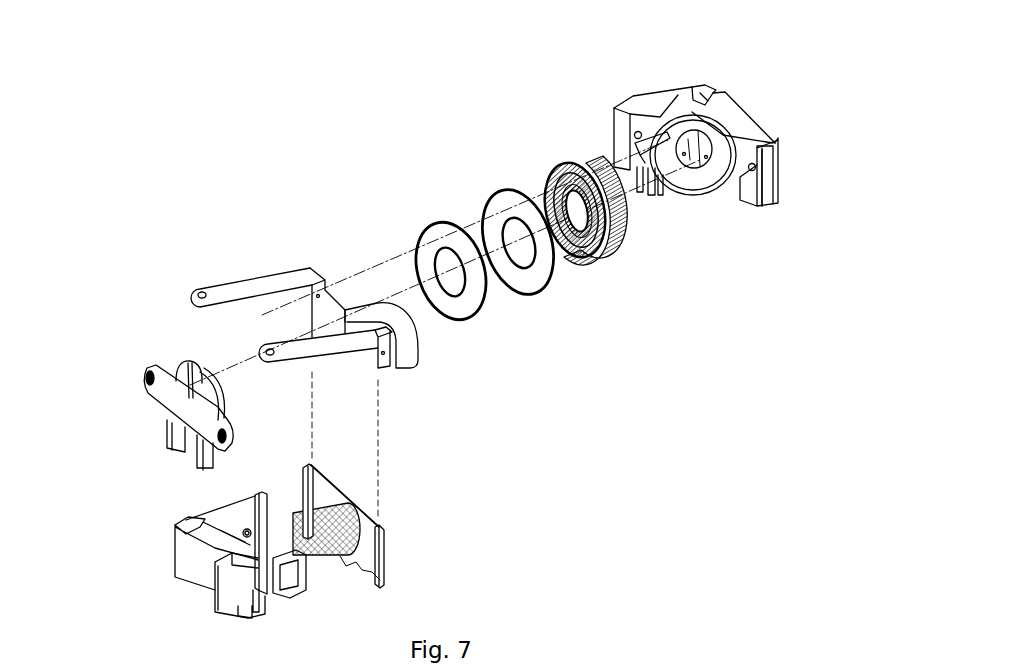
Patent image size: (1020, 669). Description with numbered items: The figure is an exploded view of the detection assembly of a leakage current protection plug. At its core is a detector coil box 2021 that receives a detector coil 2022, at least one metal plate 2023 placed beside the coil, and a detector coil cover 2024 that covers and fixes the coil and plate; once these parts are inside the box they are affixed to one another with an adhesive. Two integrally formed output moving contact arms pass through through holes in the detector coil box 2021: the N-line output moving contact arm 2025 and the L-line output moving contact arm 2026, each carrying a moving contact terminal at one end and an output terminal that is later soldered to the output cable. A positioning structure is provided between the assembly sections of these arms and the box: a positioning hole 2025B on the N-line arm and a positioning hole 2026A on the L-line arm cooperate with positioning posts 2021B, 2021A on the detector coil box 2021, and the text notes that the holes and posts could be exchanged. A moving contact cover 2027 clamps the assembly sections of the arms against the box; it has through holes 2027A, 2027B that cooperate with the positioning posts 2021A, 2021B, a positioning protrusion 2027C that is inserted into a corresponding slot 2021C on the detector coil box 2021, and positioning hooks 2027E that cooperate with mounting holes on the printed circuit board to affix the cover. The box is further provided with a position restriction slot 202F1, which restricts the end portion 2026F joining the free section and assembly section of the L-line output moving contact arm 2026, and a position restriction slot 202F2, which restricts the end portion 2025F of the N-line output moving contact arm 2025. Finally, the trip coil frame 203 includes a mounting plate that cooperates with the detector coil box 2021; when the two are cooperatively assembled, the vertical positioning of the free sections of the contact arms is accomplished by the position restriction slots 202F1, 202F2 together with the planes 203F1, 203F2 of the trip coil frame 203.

The detector coil box 2021 is at (732, 108).
The positioning post 2021A is at (765, 202).
The positioning post 2021B is at (612, 142).
The slot 2021C is at (703, 84).
The position restriction slot 202F1 is at (757, 167).
The position restriction slot 202F2 is at (615, 118).
The detector coil 2022 is at (548, 172).
The metal plate 2023 is at (537, 278).
The detector coil cover 2024 is at (437, 235).
The N-line output moving contact arm 2025 is at (254, 264).
The end portion 2025F is at (305, 270).
The positioning hole 2025B is at (339, 275).
The L-line output moving contact arm 2026 is at (416, 376).
The positioning hole 2026A is at (381, 370).
The end portion 2026F is at (407, 347).
The moving contact cover 2027 is at (125, 407).
The through hole 2027A is at (205, 472).
The through hole 2027B is at (147, 385).
The positioning protrusion 2027C is at (193, 365).
The positioning hooks 2027E is at (200, 467).
The trip coil frame 203 is at (292, 533).
The plane 203F1 is at (380, 520).
The plane 203F2 is at (307, 463).